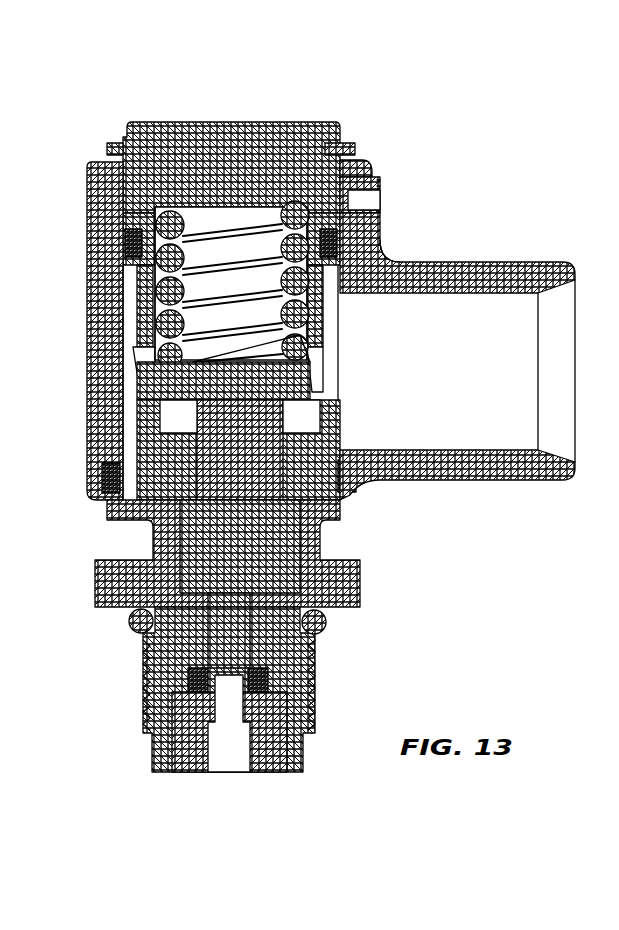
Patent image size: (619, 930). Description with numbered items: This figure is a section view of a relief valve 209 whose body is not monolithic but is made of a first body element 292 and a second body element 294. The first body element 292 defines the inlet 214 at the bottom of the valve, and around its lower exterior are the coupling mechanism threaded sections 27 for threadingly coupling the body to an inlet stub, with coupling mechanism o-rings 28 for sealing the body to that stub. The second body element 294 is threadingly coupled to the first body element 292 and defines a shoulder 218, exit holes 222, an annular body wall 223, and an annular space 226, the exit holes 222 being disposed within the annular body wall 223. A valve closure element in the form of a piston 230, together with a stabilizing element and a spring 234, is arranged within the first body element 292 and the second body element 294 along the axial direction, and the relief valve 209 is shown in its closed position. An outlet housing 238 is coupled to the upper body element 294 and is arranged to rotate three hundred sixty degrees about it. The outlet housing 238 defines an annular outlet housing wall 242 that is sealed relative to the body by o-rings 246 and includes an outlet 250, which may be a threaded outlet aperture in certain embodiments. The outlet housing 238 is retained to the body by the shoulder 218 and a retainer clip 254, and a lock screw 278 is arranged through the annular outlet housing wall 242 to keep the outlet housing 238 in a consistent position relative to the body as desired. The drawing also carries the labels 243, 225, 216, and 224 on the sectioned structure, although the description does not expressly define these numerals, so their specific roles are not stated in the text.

The relief valve 209 is at (497, 156).
The second body element 294 is at (205, 152).
The annular space 226 is at (128, 243).
The retainer clip 254 is at (345, 143).
The lock screw 278 is at (380, 205).
The annular outlet housing wall 242 is at (105, 412).
The sleeve 243 is at (137, 302).
The exit holes 222 is at (140, 372).
The annular body wall 223 is at (318, 333).
The spring 225 is at (300, 350).
The spring 234 is at (300, 378).
The piston 216 is at (305, 438).
The shoulder 218 is at (350, 506).
The o-rings 246 is at (106, 493).
The outlet housing 238 is at (398, 275).
The fillet 224 is at (345, 270).
The outlet 250 is at (442, 450).
The piston 230 is at (250, 598).
The coupling mechanism o-rings 28 is at (130, 628).
The first body element 292 is at (284, 664).
The coupling mechanism threaded sections 27 is at (145, 708).
The inlet 214 is at (218, 762).